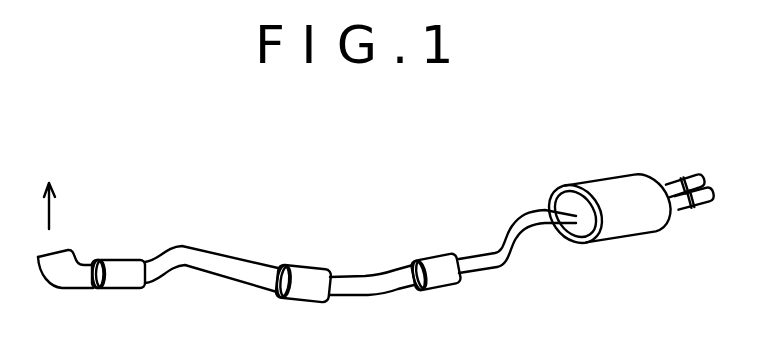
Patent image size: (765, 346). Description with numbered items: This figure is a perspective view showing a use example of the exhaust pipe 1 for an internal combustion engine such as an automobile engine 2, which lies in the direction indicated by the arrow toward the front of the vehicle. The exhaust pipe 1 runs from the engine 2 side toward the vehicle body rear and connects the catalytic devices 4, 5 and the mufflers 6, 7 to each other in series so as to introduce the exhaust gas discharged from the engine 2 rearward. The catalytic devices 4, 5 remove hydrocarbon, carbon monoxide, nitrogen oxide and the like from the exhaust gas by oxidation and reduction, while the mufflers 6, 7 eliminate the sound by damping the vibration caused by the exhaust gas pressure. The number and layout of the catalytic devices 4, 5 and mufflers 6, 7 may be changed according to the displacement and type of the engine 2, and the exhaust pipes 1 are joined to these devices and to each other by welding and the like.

The exhaust pipe 1 is at (215, 250).
The engine 2 is at (51, 190).
The catalytic device 4 is at (118, 259).
The catalytic device 5 is at (305, 266).
The muffler 6 is at (430, 259).
The muffler 7 is at (600, 179).